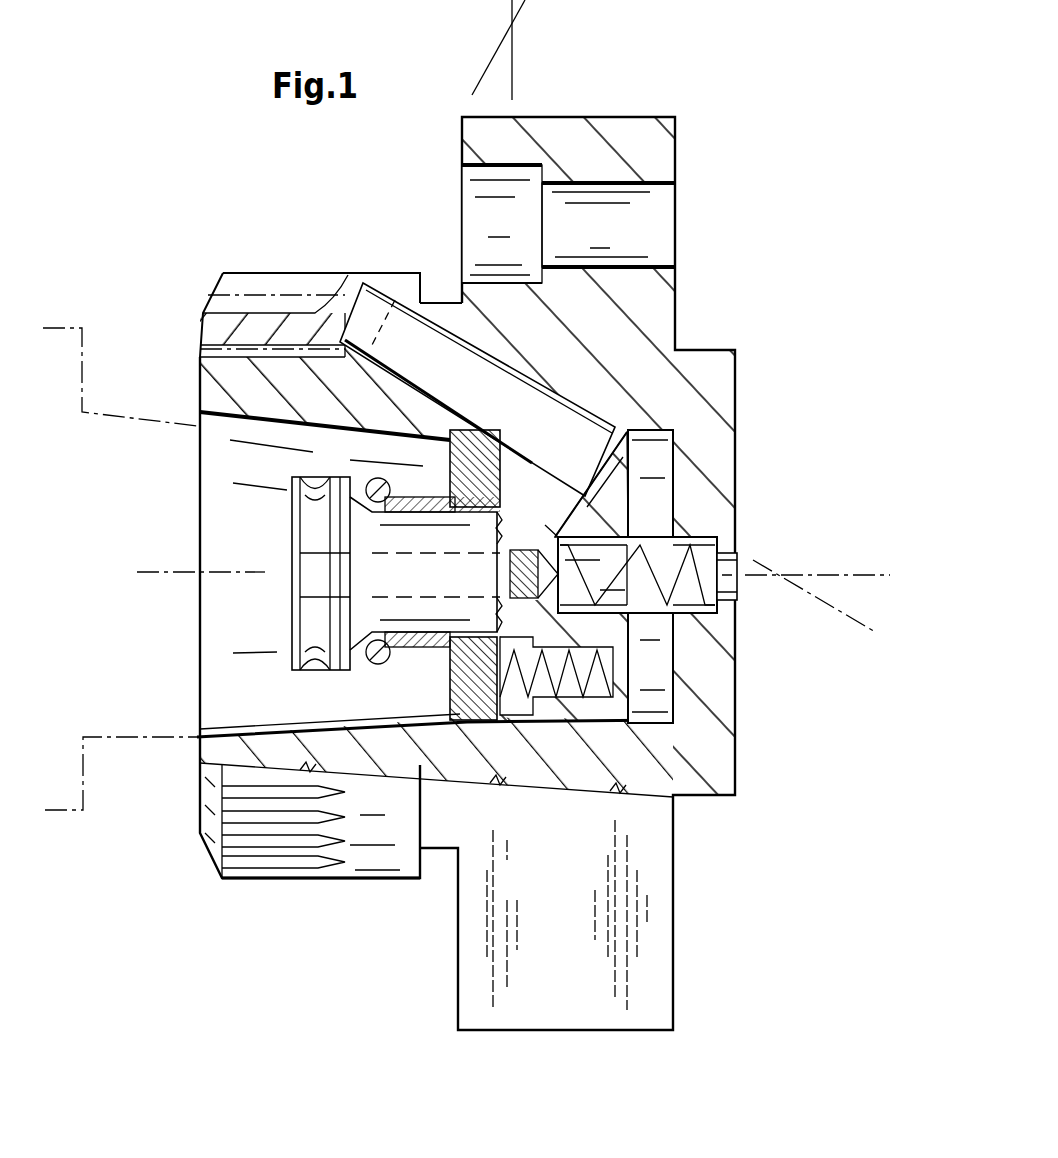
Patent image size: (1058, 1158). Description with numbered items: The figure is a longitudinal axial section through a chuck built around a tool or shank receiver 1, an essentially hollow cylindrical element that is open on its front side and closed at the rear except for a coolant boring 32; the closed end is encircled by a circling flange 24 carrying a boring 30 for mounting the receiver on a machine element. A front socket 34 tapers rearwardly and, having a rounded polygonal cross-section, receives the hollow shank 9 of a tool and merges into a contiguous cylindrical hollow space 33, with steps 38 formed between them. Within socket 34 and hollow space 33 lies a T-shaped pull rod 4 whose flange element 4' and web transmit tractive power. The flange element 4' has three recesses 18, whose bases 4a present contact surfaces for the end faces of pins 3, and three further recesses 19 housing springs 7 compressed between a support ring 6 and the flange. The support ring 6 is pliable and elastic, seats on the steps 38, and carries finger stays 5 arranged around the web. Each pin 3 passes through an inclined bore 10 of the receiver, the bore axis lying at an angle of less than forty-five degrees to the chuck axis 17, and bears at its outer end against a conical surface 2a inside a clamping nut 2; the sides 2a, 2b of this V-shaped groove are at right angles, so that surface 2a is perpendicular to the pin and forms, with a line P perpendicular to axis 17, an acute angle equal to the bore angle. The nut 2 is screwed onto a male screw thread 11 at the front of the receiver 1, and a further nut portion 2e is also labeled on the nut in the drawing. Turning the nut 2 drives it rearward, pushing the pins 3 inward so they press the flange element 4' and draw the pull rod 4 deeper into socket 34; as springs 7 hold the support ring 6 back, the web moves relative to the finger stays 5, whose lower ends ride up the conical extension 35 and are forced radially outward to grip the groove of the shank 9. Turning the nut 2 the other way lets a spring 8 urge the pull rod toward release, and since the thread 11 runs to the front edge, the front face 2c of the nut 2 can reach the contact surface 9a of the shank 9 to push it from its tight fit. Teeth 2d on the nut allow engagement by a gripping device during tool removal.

The tool or shank receiver 1 is at (600, 147).
The clamping nut 2 is at (275, 262).
The conical surface 2a is at (345, 325).
The groove side surface 2b is at (375, 300).
The front face of the nut 2c is at (200, 330).
The teeth 2d is at (230, 283).
The flange shoulder 2e is at (412, 290).
The pin 3 is at (412, 330).
The pull rod or tension element 4 is at (639, 576).
The flange element 4' is at (706, 572).
The base of recess 4a is at (580, 497).
The finger stays 5 is at (377, 482).
The support ring 6 is at (455, 695).
The spring 7 is at (597, 672).
The spring 8 is at (720, 562).
The hollow shank 9 is at (63, 795).
The surface of contact 9a is at (82, 357).
The bore 10 is at (518, 380).
The male screw thread 11 is at (200, 355).
The axis of the chuck 17 is at (150, 572).
The recess 18 is at (600, 528).
The further recess 19 is at (700, 790).
The circling flange 24 is at (676, 157).
The boring 30 is at (660, 223).
The coolant boring 32 is at (742, 588).
The hollow space 33 is at (663, 700).
The socket 34 is at (225, 723).
The conical extension 35 is at (355, 540).
The steps 38 is at (450, 438).
The line perpendicular to axis P is at (515, 82).